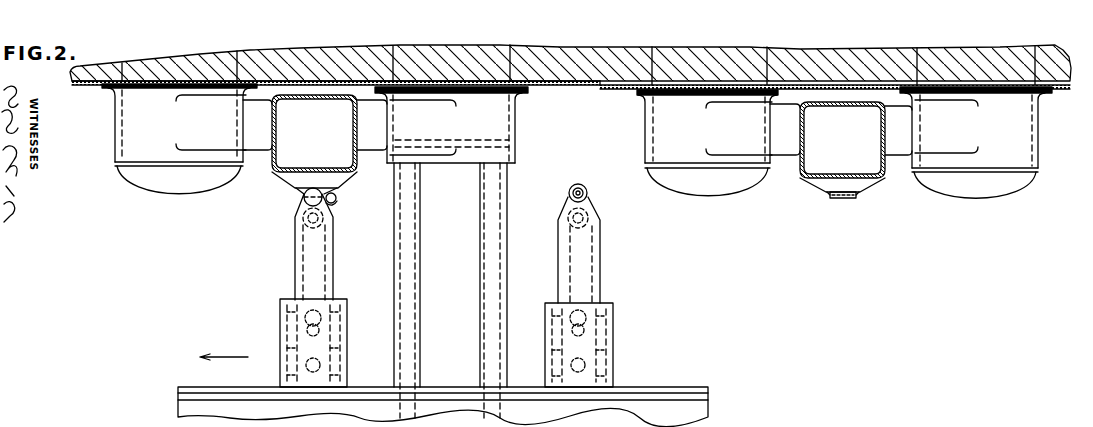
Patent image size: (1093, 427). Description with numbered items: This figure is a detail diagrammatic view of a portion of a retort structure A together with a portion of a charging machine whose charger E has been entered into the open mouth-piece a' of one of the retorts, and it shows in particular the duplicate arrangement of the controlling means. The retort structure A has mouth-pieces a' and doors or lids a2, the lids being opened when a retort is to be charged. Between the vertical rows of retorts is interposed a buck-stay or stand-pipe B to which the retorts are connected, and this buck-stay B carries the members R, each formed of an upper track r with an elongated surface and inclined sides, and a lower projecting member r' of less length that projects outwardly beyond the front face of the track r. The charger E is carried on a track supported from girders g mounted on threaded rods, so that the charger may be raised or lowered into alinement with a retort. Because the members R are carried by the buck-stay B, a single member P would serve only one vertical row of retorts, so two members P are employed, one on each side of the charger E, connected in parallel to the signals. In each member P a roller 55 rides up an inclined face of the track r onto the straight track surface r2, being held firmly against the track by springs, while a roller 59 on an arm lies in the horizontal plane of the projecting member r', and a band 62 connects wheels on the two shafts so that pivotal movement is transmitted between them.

The retort structure A is at (582, 76).
The mouth-piece a' is at (577, 126).
The door or lid a2 is at (177, 188).
The buck-stay or stand-pipe B is at (578, 136).
The track r is at (578, 182).
The track surface r2 is at (323, 190).
The projecting member r' is at (851, 202).
The roller or wheel 55 is at (305, 199).
The roller 59 is at (338, 200).
The band 62 is at (330, 251).
The member carried by the machine P is at (282, 306).
The charger E is at (492, 353).
The girder g is at (663, 389).